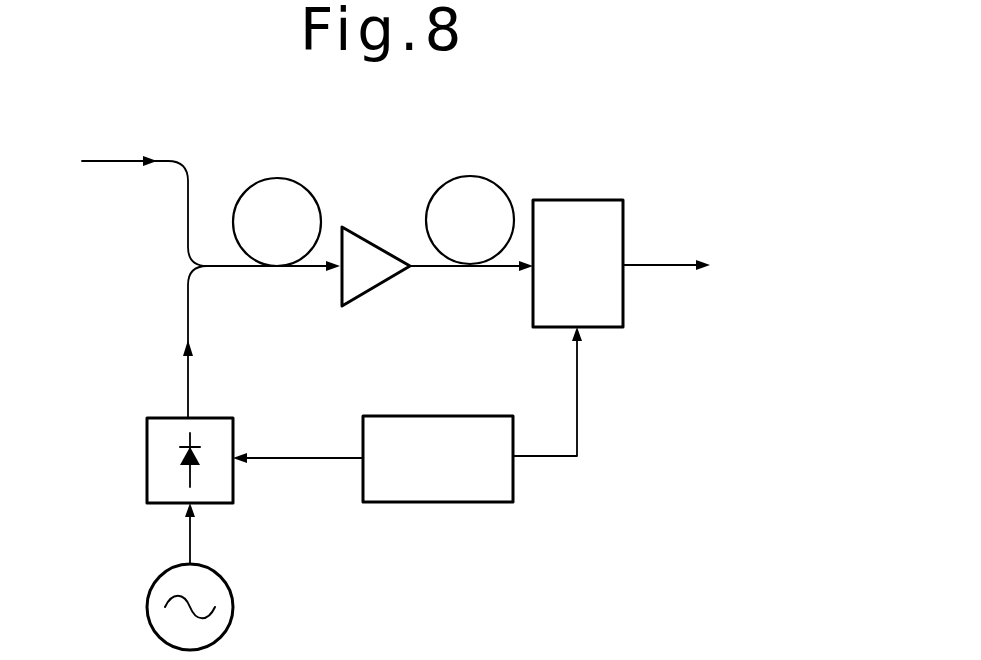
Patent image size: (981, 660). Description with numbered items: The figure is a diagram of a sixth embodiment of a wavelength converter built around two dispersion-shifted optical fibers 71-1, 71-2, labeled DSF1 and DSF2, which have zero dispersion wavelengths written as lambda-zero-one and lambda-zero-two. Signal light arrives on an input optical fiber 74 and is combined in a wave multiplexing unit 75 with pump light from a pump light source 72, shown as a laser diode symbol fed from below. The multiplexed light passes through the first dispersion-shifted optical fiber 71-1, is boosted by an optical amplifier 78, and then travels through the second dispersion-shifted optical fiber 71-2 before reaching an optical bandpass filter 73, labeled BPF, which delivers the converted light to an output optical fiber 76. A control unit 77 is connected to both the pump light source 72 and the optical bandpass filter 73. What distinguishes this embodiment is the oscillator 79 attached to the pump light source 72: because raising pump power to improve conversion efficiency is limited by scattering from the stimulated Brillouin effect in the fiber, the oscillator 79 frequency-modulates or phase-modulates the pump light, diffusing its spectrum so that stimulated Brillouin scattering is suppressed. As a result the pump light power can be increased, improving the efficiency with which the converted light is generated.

The dispersion-shifted optical fiber 71-1 is at (307, 251).
The dispersion-shifted optical fiber 71-2 is at (502, 249).
The pump light source 72 is at (146, 463).
The optical bandpass filter 73 is at (585, 198).
The input optical fiber 74 is at (122, 162).
The wave multiplexing unit 75 is at (188, 265).
The output optical fiber 76 is at (650, 265).
The control unit 77 is at (463, 502).
The optical amplifier 78 is at (373, 290).
The oscillator 79 is at (233, 610).